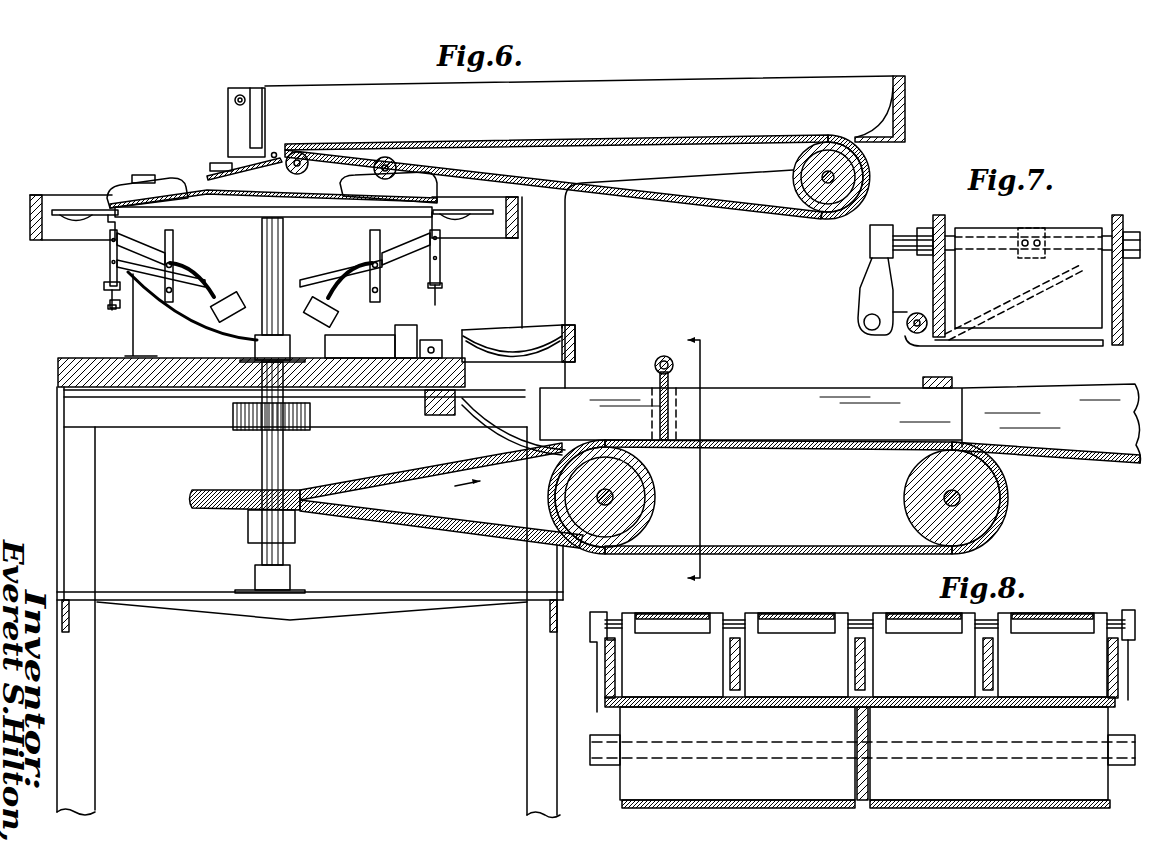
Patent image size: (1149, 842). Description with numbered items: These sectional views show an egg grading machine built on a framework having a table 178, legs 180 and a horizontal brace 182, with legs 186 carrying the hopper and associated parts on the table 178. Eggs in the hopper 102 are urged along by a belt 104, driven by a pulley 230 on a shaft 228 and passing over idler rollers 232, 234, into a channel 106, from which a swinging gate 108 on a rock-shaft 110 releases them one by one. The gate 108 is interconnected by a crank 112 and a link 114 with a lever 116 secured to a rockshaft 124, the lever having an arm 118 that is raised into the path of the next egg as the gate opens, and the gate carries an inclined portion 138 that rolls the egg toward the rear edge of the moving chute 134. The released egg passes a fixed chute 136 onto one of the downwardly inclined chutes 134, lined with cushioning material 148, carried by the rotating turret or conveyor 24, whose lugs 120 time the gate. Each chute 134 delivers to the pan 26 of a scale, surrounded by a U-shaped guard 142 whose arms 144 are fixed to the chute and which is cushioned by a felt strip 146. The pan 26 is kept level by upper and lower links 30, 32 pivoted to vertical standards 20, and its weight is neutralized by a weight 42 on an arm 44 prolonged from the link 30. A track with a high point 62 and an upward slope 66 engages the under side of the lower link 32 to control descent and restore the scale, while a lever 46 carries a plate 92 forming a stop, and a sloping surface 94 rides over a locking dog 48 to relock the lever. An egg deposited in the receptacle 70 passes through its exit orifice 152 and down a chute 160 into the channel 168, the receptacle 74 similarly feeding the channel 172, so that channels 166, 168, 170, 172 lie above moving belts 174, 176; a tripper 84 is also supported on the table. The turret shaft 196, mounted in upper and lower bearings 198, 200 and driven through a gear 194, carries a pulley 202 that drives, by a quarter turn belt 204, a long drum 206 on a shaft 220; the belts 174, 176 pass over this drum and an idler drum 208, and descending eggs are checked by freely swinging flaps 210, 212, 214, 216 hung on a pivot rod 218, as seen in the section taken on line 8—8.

In FIG. 6, the section line 8— 8 is at (445, 354).
In FIG. 6, the vertical standards 20 is at (175, 247).
In FIG. 6, the conveyor 24 is at (285, 238).
In FIG. 6, the pan 26 is at (70, 209).
In FIG. 6, the upper link 30 is at (273, 247).
In FIG. 6, the lower link 32 is at (170, 295).
In FIG. 6, the weight 42 is at (240, 295).
In FIG. 6, the arm 44 is at (208, 288).
In FIG. 6, the lever 46 is at (108, 250).
In FIG. 6, the locking dog 48 is at (110, 306).
In FIG. 6, the high point 62 is at (133, 305).
In FIG. 6, the upward slope 66 is at (200, 330).
In FIG. 6, the receptacle 70 is at (480, 332).
In FIG. 6, the receptacle 74 is at (325, 345).
In FIG. 6, the tripper 84 is at (395, 340).
In FIG. 6, the plate 92 is at (104, 284).
In FIG. 6, the sloping surface 94 is at (108, 300).
In FIG. 6, the hopper 102 is at (906, 118).
In FIG. 6, the belt 104 is at (705, 138).
In FIG. 7, the channel 106 is at (952, 262).
In FIG. 6, the swinging gate 108 is at (262, 100).
In FIG. 7, the swinging gate 108 is at (1066, 258).
In FIG. 6, the rock-shaft 110 is at (235, 99).
In FIG. 7, the rock-shaft 110 is at (1112, 230).
In FIG. 7, the crank 112 is at (885, 232).
In FIG. 7, the link 114 is at (868, 268).
In FIG. 7, the lever 116 is at (893, 330).
In FIG. 6, the arm 118 is at (272, 154).
In FIG. 7, the arm 118 is at (1058, 340).
In FIG. 6, the lugs 120 is at (153, 172).
In FIG. 7, the rockshaft 124 is at (913, 334).
In FIG. 6, the inclined chutes 134 is at (178, 190).
In FIG. 6, the fixed chute 136 is at (218, 162).
In FIG. 6, the inclined portion 138 is at (248, 128).
In FIG. 6, the guard 142 is at (30, 206).
In FIG. 6, the arms 144 is at (97, 194).
In FIG. 6, the cushioning strip 146 is at (42, 242).
In FIG. 6, the cushioning material 148 is at (136, 184).
In FIG. 6, the exit orifice 152 is at (512, 338).
In FIG. 6, the inclined chute 160 is at (515, 416).
In FIG. 8, the channel 166 is at (616, 661).
In FIG. 8, the channel 168 is at (730, 661).
In FIG. 8, the channel 170 is at (855, 661).
In FIG. 8, the channel 172 is at (983, 661).
In FIG. 6, the moving belt 174 is at (795, 452).
In FIG. 8, the moving belt 174 is at (768, 708).
In FIG. 8, the moving belt 176 is at (1065, 808).
In FIG. 6, the table 178 is at (60, 368).
In FIG. 6, the legs 180 is at (88, 552).
In FIG. 6, the horizontal brace 182 is at (388, 597).
In FIG. 6, the legs 186 is at (552, 281).
In FIG. 6, the gear 194 is at (310, 413).
In FIG. 6, the vertical shaft 196 is at (284, 470).
In FIG. 6, the upper bearing 198 is at (255, 346).
In FIG. 6, the lower bearing 200 is at (255, 578).
In FIG. 6, the pulley 202 is at (232, 490).
In FIG. 6, the quarter turn belt 204 is at (405, 482).
In FIG. 8, the quarter turn belt 204 is at (870, 777).
In FIG. 6, the pulley 206 is at (640, 472).
In FIG. 8, the pulley 206 is at (830, 792).
In FIG. 6, the idler drum 208 is at (985, 500).
In FIG. 8, the flap 210 is at (688, 680).
In FIG. 6, the flap 212 is at (660, 416).
In FIG. 8, the flap 212 is at (808, 680).
In FIG. 8, the flap 214 is at (935, 680).
In FIG. 8, the flap 216 is at (1060, 680).
In FIG. 6, the pivot rod 218 is at (655, 366).
In FIG. 8, the pivot rod 218 is at (852, 620).
In FIG. 6, the shaft 220 is at (638, 518).
In FIG. 6, the shaft 228 is at (862, 163).
In FIG. 6, the pulley 230 is at (805, 212).
In FIG. 6, the idler roller 232 is at (287, 170).
In FIG. 6, the idler roller 234 is at (394, 168).